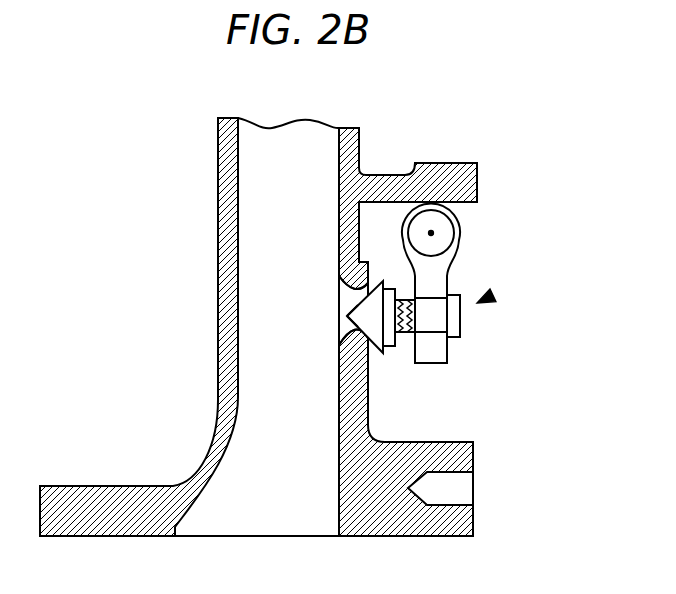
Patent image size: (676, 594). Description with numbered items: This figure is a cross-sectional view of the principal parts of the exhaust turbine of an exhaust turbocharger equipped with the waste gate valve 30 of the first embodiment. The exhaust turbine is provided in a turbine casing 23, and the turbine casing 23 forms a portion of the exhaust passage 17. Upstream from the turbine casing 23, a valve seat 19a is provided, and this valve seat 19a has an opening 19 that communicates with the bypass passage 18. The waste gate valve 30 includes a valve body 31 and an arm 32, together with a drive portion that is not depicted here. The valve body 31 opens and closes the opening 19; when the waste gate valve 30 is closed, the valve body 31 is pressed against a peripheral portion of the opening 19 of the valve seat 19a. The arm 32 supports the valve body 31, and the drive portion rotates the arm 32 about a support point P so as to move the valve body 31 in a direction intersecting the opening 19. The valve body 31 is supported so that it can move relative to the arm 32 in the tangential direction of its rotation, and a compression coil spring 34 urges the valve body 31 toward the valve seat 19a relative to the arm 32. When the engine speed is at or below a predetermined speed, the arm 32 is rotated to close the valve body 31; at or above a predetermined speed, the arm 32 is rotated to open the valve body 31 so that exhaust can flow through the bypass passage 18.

The turbine casing 23 is at (217, 160).
The compression coil spring 34 is at (405, 298).
The opening 19 is at (339, 295).
The valve body 31 is at (347, 316).
The valve seat 19a is at (342, 338).
The exhaust passage 17 is at (293, 501).
The bypass passage 18 is at (458, 419).
The support point P is at (433, 233).
The waste gate valve 30 is at (492, 296).
The arm 32 is at (447, 354).